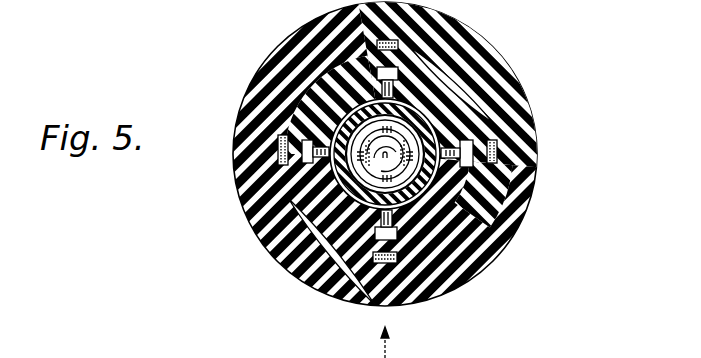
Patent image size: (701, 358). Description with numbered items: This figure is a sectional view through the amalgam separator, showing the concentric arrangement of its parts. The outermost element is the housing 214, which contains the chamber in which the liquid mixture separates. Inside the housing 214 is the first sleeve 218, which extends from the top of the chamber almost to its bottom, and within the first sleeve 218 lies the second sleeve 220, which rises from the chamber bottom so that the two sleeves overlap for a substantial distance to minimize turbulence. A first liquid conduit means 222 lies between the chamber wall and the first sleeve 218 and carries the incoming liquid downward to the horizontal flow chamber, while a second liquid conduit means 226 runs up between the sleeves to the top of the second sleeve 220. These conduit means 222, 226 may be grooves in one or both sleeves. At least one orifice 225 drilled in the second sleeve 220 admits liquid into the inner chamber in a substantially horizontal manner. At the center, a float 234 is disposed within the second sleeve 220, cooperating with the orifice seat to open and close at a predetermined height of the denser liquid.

The housing 214 is at (303, 42).
The first sleeve 218 is at (300, 108).
The second sleeve 220 is at (287, 200).
The first liquid conduit means 222 is at (393, 292).
The orifice 225 is at (505, 70).
The second liquid conduit means 226 is at (513, 183).
The float 234 is at (296, 238).